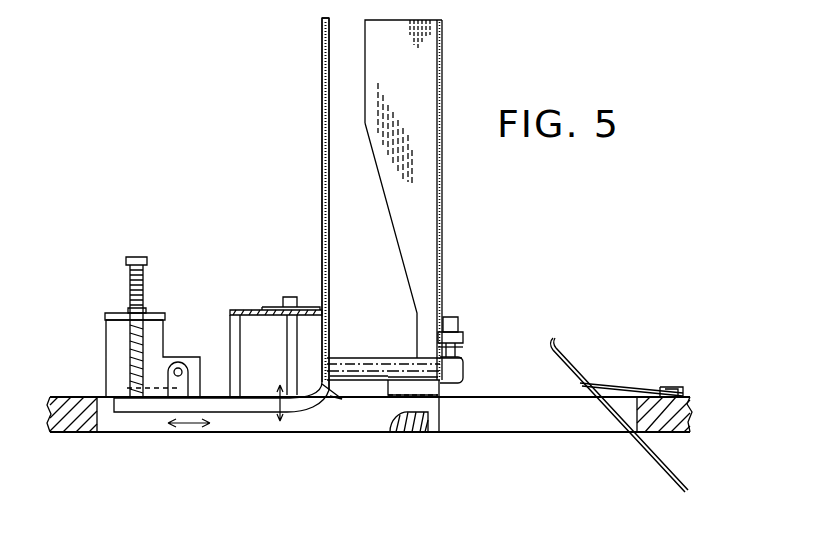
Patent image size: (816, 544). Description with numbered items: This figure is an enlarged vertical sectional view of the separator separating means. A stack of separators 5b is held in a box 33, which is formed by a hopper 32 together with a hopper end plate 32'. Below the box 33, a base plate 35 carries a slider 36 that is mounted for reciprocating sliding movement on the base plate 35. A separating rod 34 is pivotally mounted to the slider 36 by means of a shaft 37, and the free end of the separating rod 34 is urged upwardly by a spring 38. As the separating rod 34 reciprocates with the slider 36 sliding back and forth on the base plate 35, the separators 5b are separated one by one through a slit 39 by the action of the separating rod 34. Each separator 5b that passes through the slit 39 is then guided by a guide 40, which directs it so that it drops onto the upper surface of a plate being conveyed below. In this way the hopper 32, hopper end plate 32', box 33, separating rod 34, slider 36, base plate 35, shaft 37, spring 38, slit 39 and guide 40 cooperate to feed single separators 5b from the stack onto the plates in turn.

The hopper 32 is at (465, 226).
The hopper end plate 32' is at (309, 208).
The box 33 is at (413, 80).
The separating rod 34 is at (213, 403).
The base plate 35 is at (70, 403).
The slider 36 is at (155, 327).
The shaft 37 is at (178, 364).
The spring 38 is at (130, 333).
The slit 39 is at (452, 362).
The guide 40 is at (573, 367).
The separator 5b is at (378, 358).